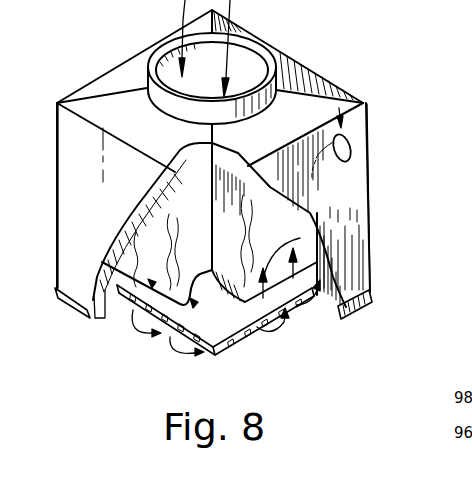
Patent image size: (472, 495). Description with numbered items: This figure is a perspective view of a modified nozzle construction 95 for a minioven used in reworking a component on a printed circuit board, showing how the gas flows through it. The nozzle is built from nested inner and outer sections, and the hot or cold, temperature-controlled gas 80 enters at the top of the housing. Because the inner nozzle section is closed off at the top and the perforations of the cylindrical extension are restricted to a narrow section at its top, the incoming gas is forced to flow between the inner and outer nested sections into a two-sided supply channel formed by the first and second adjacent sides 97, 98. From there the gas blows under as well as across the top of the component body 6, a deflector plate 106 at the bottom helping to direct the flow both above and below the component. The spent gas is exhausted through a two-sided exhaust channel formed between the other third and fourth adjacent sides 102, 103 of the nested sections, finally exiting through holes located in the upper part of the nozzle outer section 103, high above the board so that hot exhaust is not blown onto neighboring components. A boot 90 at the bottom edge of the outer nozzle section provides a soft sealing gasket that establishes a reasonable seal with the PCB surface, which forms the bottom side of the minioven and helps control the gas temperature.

The modified nozzle construction 95 is at (363, 72).
The temperature-controlled gas 80 is at (236, 22).
The second adjacent side 98 is at (104, 213).
The fourth adjacent side 103 is at (362, 198).
The first adjacent side 97 is at (203, 233).
The third adjacent side 102 is at (279, 234).
The component body 6 is at (215, 346).
The deflector plate 106 is at (107, 318).
The boot 90 is at (354, 313).